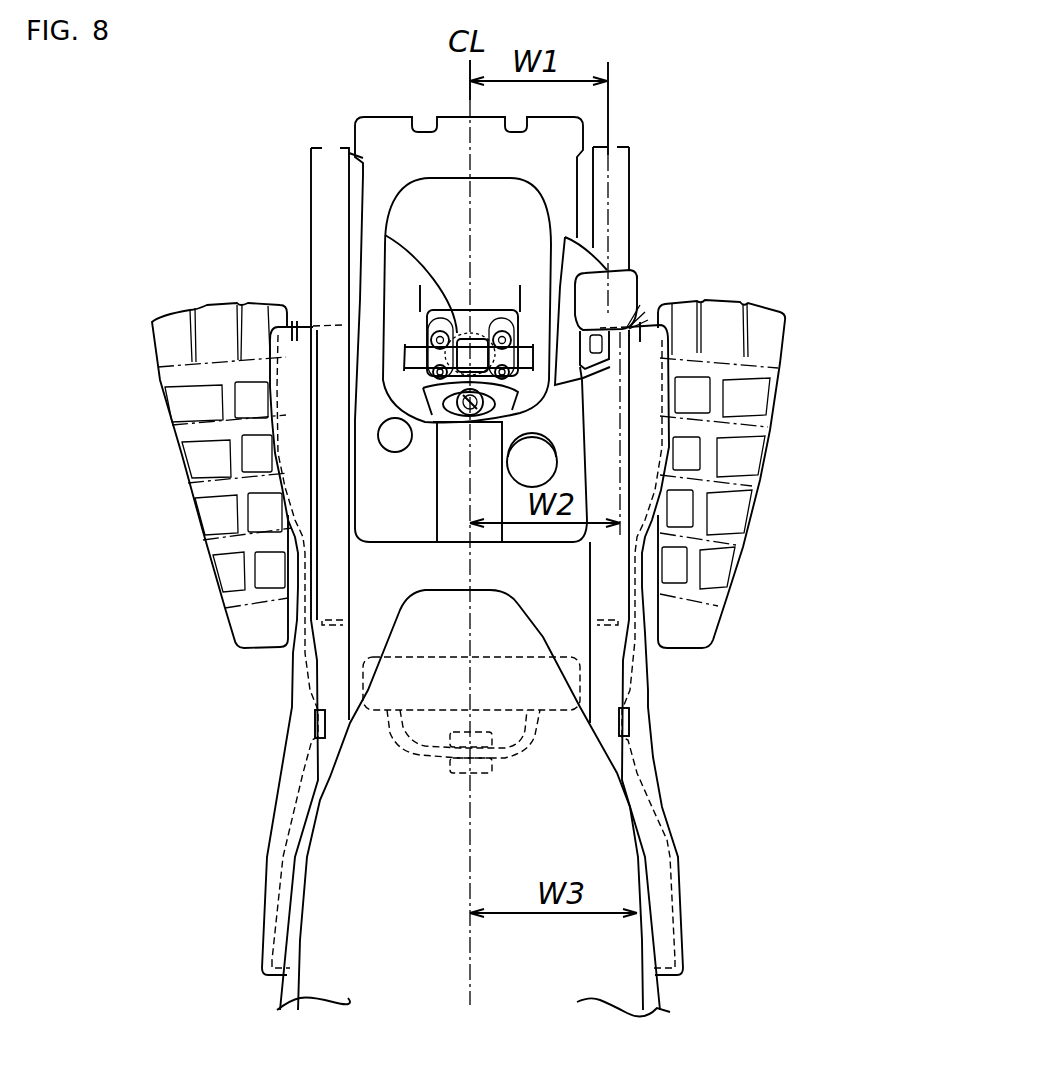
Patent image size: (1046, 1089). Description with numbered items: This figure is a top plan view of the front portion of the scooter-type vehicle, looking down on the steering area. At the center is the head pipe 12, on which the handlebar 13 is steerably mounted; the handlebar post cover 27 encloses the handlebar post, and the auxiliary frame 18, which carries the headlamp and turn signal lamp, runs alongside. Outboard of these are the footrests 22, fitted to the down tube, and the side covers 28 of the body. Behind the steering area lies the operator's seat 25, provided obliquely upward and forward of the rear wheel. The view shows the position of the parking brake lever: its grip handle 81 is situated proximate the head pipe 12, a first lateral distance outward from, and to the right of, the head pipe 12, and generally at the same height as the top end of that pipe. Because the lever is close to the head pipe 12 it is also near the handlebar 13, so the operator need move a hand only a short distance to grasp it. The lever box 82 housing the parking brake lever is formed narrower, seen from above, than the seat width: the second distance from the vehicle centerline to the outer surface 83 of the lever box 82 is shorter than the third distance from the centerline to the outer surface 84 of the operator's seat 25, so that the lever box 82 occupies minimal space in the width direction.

The head pipe 12 is at (385, 235).
The handlebar 13 is at (422, 347).
The auxiliary frame 18 is at (320, 163).
The footrest 22 is at (245, 635).
The operator's seat 25 is at (605, 827).
The handlebar post cover 27 is at (377, 210).
The side cover 28 is at (300, 328).
The grip handle 81 is at (618, 256).
The lever box 82 is at (590, 253).
The outer surface 83 is at (633, 318).
The outer surface 84 is at (668, 940).